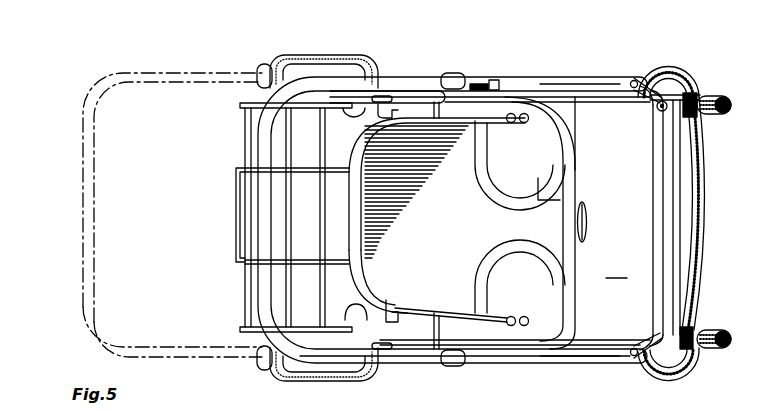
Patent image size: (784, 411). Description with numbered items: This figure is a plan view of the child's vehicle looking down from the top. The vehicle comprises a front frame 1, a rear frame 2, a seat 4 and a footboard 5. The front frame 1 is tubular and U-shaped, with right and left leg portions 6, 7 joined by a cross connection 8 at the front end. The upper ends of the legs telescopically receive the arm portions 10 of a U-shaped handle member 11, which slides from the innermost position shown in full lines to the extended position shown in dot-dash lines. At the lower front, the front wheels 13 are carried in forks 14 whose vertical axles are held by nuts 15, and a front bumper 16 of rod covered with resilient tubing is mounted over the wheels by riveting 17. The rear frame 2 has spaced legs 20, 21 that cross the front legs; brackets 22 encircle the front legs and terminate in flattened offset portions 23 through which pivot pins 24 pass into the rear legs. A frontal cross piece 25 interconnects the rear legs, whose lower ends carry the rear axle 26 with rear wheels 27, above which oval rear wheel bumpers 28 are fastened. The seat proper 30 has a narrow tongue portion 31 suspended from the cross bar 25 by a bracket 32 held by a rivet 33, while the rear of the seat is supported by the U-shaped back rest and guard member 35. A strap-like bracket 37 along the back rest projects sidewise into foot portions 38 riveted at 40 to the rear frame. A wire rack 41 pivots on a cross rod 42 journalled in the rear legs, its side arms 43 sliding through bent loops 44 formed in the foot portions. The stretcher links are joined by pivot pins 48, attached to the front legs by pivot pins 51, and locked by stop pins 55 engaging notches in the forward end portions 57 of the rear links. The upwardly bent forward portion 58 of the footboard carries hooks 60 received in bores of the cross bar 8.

The front frame 1 is at (502, 74).
The rear frame 2 is at (499, 352).
The seat 4 is at (490, 176).
The footboard 5 is at (597, 112).
The right hand leg portion 6 is at (553, 364).
The left hand leg portion 7 is at (566, 77).
The cross connection 8 is at (675, 211).
The arm portion 10 is at (160, 72).
The handle member 11 is at (80, 195).
The front wheel 13 is at (731, 100).
The fork 14 is at (694, 88).
The nut 15 is at (663, 100).
The front bumper 16 is at (706, 220).
The riveting 17 is at (636, 78).
The rear frame leg 20 is at (414, 92).
The rear frame leg 21 is at (406, 335).
The bracket 22 is at (453, 72).
The flattened offset portion 23 is at (476, 83).
The pivot pin 24 is at (481, 80).
The frontal cross piece 25 is at (577, 178).
The rear axle 26 is at (296, 214).
The rear wheel 27 is at (262, 66).
The rear wheel bumper 28 is at (300, 56).
The seat proper 30 is at (455, 299).
The tongue portion 31 is at (548, 198).
The bracket 32 is at (587, 234).
The rivet 33 is at (587, 216).
The back rest and guard member 35 is at (395, 216).
The strap-like bracket 37 is at (392, 306).
The foot portion 38 is at (383, 95).
The rivet 40 is at (384, 114).
The wire rack 41 is at (243, 141).
The cross rod 42 is at (322, 270).
The side arm 43 is at (243, 102).
The bent loop 44 is at (354, 114).
The pivot pin 48 is at (450, 407).
The pivot pin 51 is at (632, 405).
The stop pin 55 is at (500, 406).
The forward end portion 57 is at (478, 403).
The forward portion 58 is at (616, 269).
The hook 60 is at (652, 62).